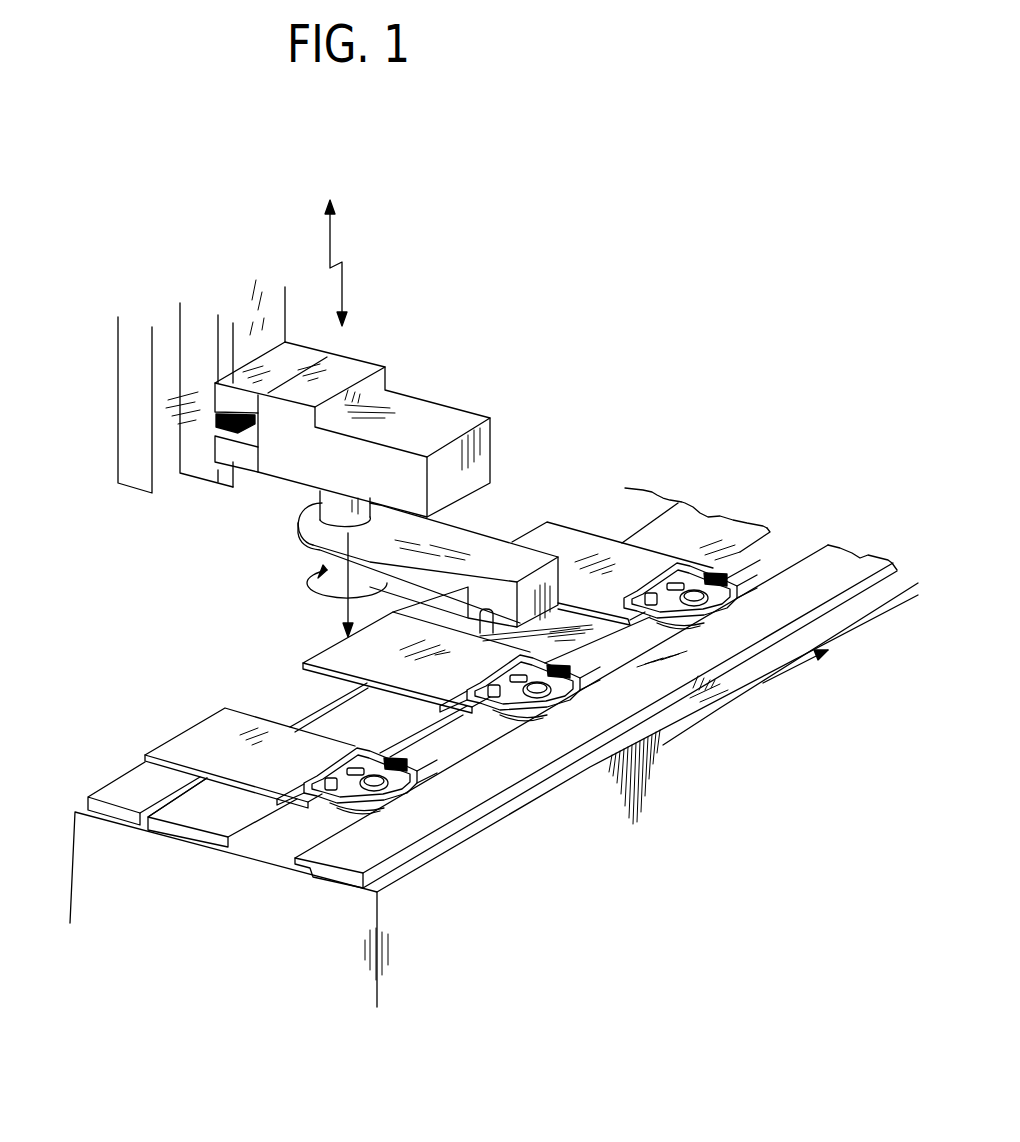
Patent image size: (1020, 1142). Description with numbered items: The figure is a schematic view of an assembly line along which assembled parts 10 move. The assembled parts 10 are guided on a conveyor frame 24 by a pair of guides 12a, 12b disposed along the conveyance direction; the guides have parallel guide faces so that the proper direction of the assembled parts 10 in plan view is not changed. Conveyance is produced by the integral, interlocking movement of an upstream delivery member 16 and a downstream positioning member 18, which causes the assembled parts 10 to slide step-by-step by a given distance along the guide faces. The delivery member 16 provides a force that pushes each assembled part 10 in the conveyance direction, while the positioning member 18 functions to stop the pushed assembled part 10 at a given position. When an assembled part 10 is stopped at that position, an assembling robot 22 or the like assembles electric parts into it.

The assembled parts 10 is at (415, 760).
The guide 12a is at (172, 832).
The guide 12b is at (338, 877).
The upstream delivery member 16 is at (303, 795).
The downstream positioning member 18 is at (372, 752).
The assembling robot 22 is at (447, 378).
The conveyor frame 24 is at (247, 926).